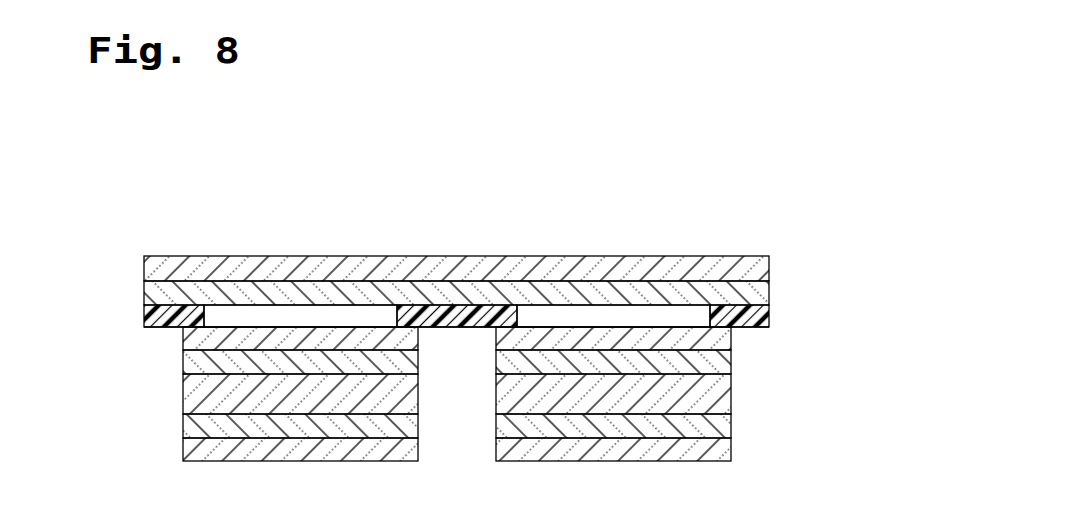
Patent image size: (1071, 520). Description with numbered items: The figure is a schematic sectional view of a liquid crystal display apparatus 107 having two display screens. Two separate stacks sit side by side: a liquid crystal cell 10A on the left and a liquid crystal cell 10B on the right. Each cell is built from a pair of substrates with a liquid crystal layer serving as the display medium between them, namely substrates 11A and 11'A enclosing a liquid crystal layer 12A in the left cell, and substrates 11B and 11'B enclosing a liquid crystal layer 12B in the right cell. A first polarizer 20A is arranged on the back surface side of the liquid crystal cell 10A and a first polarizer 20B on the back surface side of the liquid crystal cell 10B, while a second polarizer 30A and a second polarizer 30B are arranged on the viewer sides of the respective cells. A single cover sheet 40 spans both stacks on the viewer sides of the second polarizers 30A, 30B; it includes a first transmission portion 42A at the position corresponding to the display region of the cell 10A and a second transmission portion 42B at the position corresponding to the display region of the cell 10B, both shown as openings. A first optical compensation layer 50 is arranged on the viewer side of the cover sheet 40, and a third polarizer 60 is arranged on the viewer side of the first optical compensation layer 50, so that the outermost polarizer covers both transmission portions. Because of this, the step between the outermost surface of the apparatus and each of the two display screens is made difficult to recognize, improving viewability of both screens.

The liquid crystal display apparatus 107 is at (676, 138).
The third polarizer 60 is at (769, 268).
The first optical compensation layer 50 is at (769, 295).
The cover sheet 40 is at (769, 320).
The first transmission portion 42A is at (295, 317).
The second transmission portion 42B is at (630, 317).
The second polarizer 30A is at (183, 340).
The second polarizer 30B is at (731, 338).
The liquid crystal cell 10A is at (236, 398).
The liquid crystal cell 10B is at (679, 396).
The substrate 11A is at (183, 362).
The substrate 11B is at (731, 363).
The liquid crystal layer 12A is at (183, 394).
The liquid crystal layer 12B is at (731, 395).
The substrate 11'A is at (260, 428).
The substrate 11'B is at (654, 428).
The first polarizer 20A is at (183, 450).
The first polarizer 20B is at (731, 450).